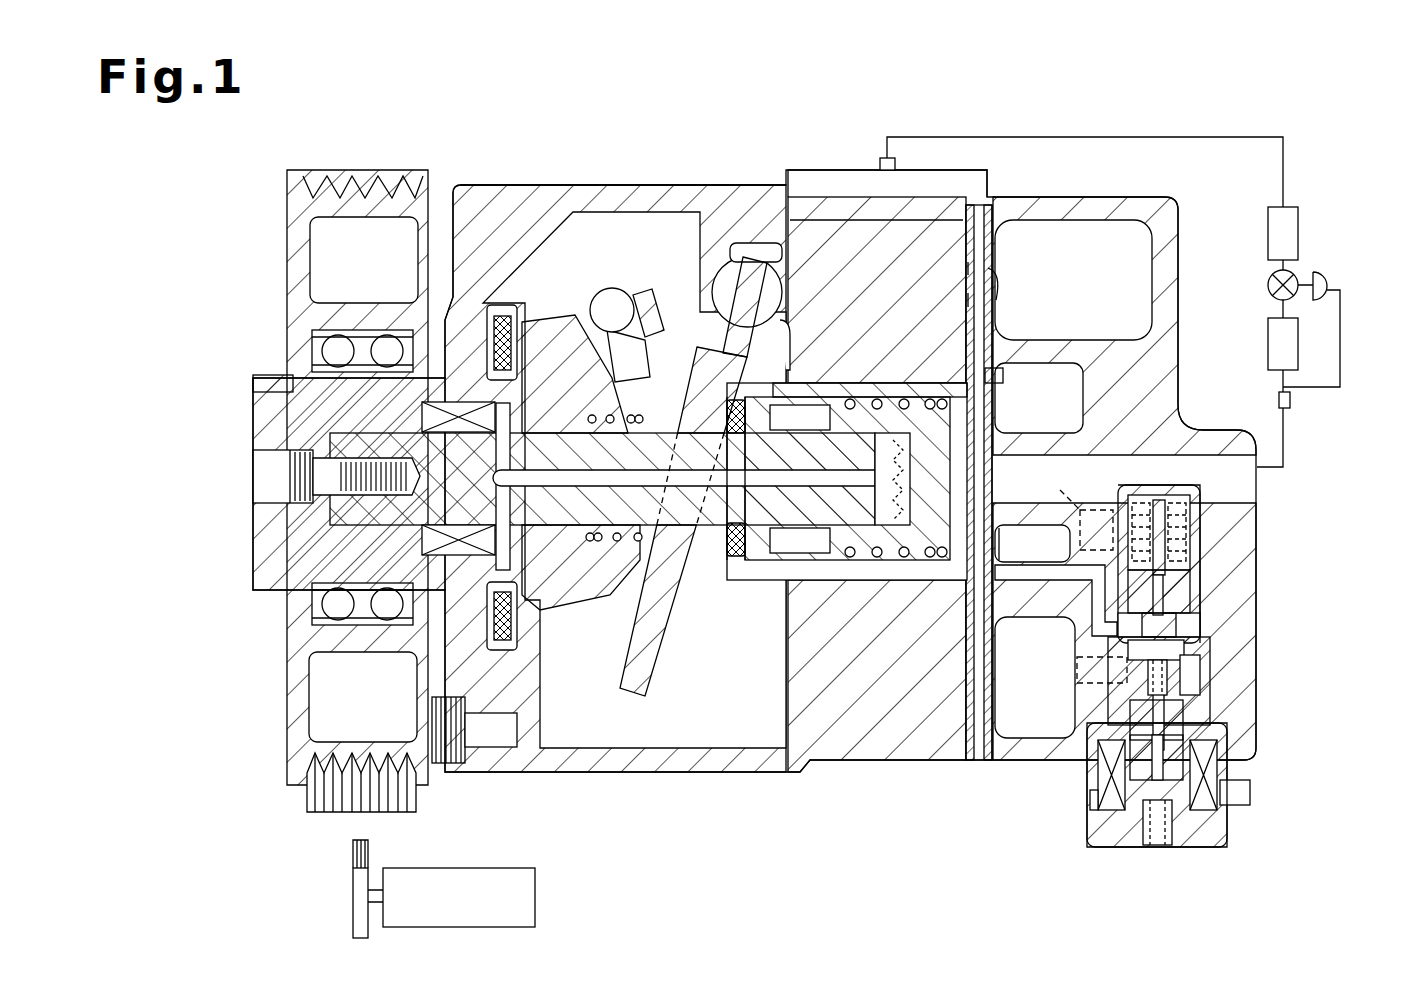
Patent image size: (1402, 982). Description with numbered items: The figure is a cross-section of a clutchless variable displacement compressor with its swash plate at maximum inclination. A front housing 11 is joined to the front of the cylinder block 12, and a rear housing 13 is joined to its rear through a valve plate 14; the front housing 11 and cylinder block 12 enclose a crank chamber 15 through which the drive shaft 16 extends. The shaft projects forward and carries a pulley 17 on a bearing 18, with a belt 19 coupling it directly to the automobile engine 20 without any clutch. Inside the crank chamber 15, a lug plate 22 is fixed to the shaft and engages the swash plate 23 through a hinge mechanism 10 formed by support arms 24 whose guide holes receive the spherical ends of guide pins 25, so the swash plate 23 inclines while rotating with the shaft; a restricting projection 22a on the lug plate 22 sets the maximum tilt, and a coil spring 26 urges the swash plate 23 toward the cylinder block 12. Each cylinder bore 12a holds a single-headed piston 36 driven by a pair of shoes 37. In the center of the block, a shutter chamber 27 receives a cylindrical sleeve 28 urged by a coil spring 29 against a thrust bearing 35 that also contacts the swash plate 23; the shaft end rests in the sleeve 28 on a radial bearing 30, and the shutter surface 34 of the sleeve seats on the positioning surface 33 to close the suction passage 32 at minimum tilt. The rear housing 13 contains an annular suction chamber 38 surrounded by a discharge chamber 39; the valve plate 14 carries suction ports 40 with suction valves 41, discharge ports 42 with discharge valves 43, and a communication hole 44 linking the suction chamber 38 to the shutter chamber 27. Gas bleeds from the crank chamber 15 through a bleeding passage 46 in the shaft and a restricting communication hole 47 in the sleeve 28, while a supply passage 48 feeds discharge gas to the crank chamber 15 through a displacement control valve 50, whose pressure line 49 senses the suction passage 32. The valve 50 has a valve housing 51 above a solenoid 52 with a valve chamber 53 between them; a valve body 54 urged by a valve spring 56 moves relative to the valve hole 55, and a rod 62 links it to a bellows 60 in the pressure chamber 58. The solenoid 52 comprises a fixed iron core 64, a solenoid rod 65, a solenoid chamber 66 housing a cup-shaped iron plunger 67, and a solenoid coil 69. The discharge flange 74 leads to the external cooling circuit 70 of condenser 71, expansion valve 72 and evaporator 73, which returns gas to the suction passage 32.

The hinge mechanism 10 is at (612, 224).
The front housing 11 is at (640, 770).
The cylinder block 12 is at (870, 762).
The cylinder bore 12a is at (800, 198).
The rear housing 13 is at (1010, 760).
The valve plate 14 is at (975, 762).
The crank chamber 15 is at (708, 731).
The drive shaft 16 is at (330, 512).
The pulley 17 is at (290, 268).
The bearing 18 is at (387, 345).
The belt 19 is at (382, 176).
The automobile engine 20 is at (528, 866).
The lug plate 22 is at (543, 678).
The restricting projection 22a is at (590, 575).
The swash plate 23 is at (662, 650).
The support arm 24 is at (590, 318).
The guide pin 25 is at (648, 352).
The coil spring 26 is at (600, 412).
The shutter chamber 27 is at (940, 565).
The cylindrical sleeve 28 is at (824, 397).
The coil spring 29 is at (865, 560).
The radial bearing 30 is at (800, 522).
The suction passage 32 is at (1256, 500).
The positioning surface 33 is at (988, 470).
The shutter surface 34 is at (893, 479).
The thrust bearing 35 is at (735, 545).
The single-headed piston 36 is at (722, 210).
The shoe 37 is at (638, 310).
The suction chamber 38 is at (1066, 418).
The discharge chamber 39 is at (1083, 281).
The suction port 40 is at (992, 370).
The suction valve 41 is at (985, 378).
The discharge port 42 is at (968, 270).
The discharge valve 43 is at (968, 300).
The communication hole 44 is at (988, 540).
The bleeding passage 46 is at (553, 486).
The communication hole 47 is at (893, 481).
The supply passage 48 is at (812, 593).
The pressure line 49 is at (1077, 501).
The displacement control valve 50 is at (1061, 853).
The valve housing 51 is at (1200, 590).
The solenoid 52 is at (1235, 728).
The valve chamber 53 is at (1128, 662).
The valve body 54 is at (1148, 672).
The valve hole 55 is at (1200, 640).
The valve spring 56 is at (1200, 660).
The pressure chamber 58 is at (1182, 530).
The bellows 60 is at (1190, 560).
The rod 62 is at (1196, 610).
The fixed iron core 64 is at (1130, 740).
The solenoid rod 65 is at (1130, 765).
The solenoid chamber 66 is at (1158, 848).
The iron plunger 67 is at (1212, 823).
The solenoid coil 69 is at (1105, 790).
The external cooling circuit 70 is at (1230, 150).
The condenser 71 is at (1268, 235).
The expansion valve 72 is at (1268, 286).
The evaporator 73 is at (1268, 343).
The discharge flange 74 is at (880, 163).